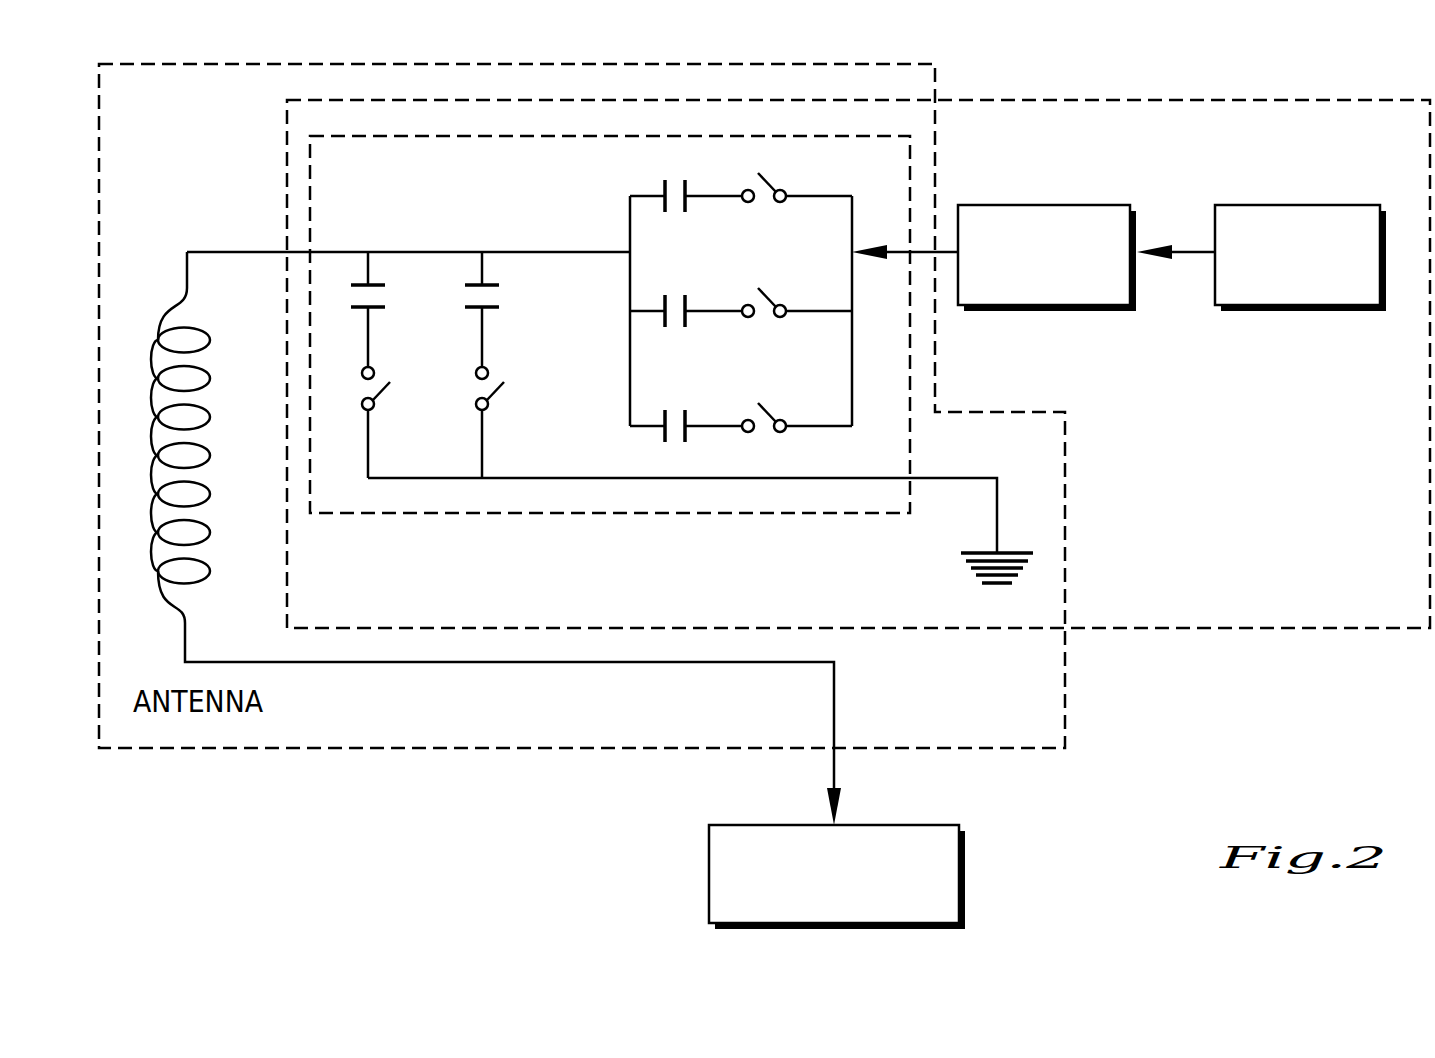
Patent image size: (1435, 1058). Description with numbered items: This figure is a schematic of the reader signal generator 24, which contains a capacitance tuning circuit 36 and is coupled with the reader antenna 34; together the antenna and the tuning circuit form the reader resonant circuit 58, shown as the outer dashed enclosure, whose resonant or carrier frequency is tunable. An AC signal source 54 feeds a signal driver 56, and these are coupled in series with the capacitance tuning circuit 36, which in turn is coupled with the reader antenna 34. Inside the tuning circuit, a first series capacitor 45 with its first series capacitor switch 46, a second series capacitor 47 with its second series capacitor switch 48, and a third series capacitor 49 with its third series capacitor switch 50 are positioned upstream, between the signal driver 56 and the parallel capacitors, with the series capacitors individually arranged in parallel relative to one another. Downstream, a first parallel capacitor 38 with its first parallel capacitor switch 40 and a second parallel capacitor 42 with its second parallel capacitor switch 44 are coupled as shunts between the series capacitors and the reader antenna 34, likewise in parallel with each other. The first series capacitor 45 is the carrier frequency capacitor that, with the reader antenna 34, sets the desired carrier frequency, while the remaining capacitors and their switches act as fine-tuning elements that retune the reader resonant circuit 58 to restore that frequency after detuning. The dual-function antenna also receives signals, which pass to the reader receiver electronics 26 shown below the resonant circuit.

The reader resonant circuit 58 is at (158, 63).
The reader signal generator 24 is at (287, 142).
The capacitance tuning circuit 36 is at (368, 137).
The reader antenna 34 is at (200, 332).
The first parallel capacitor 38 is at (372, 310).
The second parallel capacitor 42 is at (486, 310).
The first parallel capacitor switch 40 is at (380, 400).
The second parallel capacitor switch 44 is at (494, 400).
The third series capacitor 49 is at (660, 190).
The second series capacitor 47 is at (660, 318).
The first series capacitor 45 is at (660, 436).
The third series capacitor switch 50 is at (774, 206).
The second series capacitor switch 48 is at (774, 321).
The first series capacitor switch 46 is at (774, 436).
The signal driver 56 is at (1095, 213).
The AC signal source 54 is at (1345, 213).
The reader receiver electronics 26 is at (925, 832).